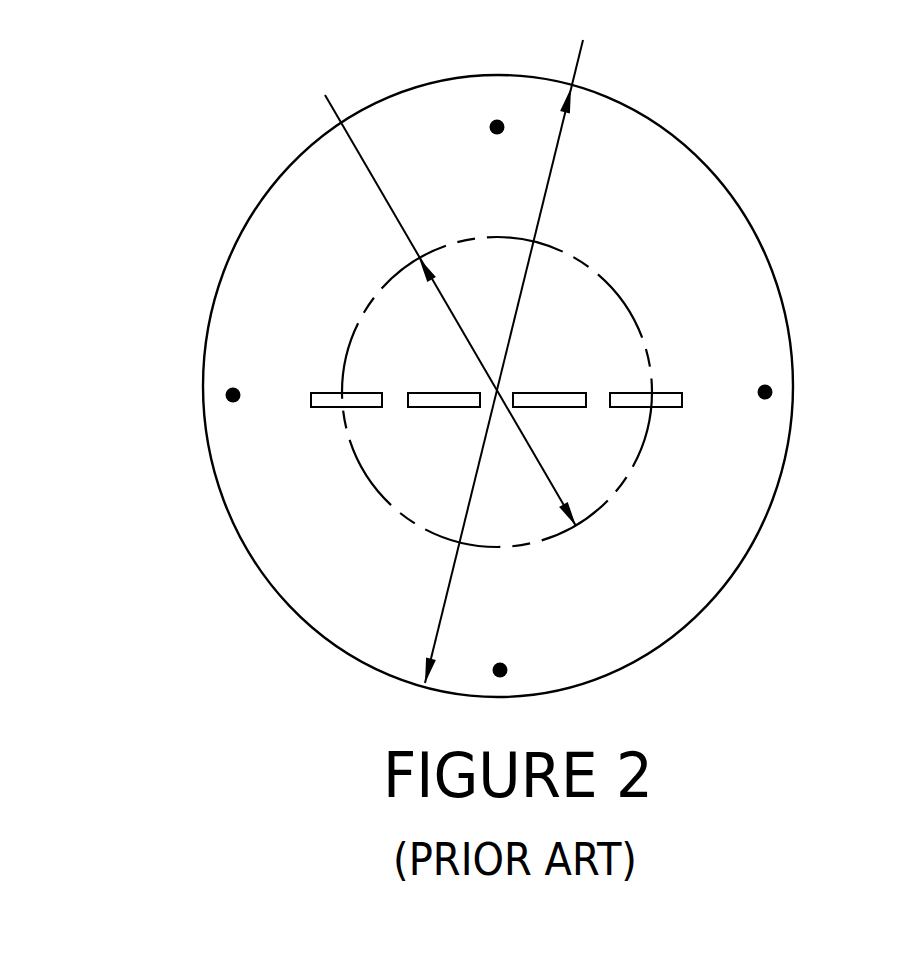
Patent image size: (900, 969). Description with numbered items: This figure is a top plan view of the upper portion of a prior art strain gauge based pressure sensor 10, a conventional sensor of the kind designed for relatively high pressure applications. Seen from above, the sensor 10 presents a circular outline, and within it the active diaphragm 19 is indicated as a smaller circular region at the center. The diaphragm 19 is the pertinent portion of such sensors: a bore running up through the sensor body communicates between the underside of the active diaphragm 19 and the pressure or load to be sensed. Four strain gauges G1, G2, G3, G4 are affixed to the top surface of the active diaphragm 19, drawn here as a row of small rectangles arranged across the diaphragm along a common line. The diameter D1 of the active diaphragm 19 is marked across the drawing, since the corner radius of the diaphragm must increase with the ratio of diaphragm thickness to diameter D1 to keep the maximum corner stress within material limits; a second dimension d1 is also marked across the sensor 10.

The strain gauge based pressure sensor 10 is at (201, 73).
The active diaphragm 19 is at (597, 305).
The diameter of the active diaphragm D1 is at (325, 95).
The diameter of outer disk d1 is at (583, 40).
The strain gauge G1 is at (319, 398).
The strain gauge G2 is at (444, 379).
The strain gauge G3 is at (549, 379).
The strain gauge G4 is at (677, 398).